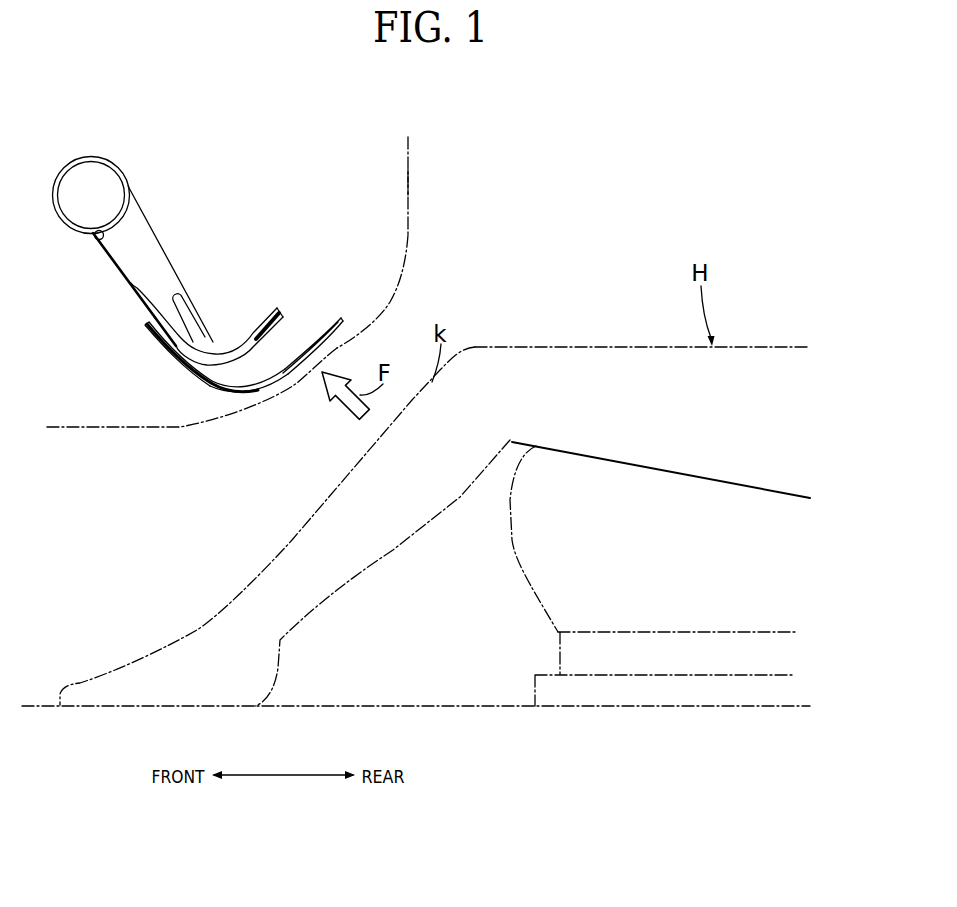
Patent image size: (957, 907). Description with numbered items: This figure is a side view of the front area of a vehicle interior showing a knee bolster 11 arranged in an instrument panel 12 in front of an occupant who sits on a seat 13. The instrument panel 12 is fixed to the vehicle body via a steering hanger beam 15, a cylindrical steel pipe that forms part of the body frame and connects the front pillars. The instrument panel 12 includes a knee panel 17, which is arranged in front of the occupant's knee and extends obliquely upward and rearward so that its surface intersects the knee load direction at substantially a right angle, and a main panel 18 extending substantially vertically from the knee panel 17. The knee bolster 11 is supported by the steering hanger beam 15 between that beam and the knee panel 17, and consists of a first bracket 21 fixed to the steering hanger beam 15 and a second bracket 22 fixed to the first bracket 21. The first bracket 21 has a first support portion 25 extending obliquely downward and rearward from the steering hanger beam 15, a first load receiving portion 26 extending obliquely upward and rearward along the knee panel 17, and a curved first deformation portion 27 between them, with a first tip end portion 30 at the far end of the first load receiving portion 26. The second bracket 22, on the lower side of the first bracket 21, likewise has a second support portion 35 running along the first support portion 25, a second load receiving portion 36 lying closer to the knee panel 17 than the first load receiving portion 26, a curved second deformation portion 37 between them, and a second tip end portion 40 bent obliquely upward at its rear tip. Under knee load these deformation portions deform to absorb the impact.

The knee bolster 11 is at (333, 250).
The instrument panel 12 is at (420, 146).
The seat 13 is at (527, 580).
The steering hanger beam 15 is at (86, 158).
The knee panel 17 is at (295, 390).
The main panel 18 is at (412, 180).
The first bracket 21 is at (150, 213).
The second bracket 22 is at (190, 388).
The first support portion 25 is at (145, 246).
The first load receiving portion 26 is at (270, 327).
The first deformation portion 27 is at (211, 343).
The first tip end portion 30 is at (282, 297).
The second support portion 35 is at (158, 338).
The second load receiving portion 36 is at (337, 320).
The second deformation portion 37 is at (232, 389).
The second tip end portion 40 is at (348, 321).